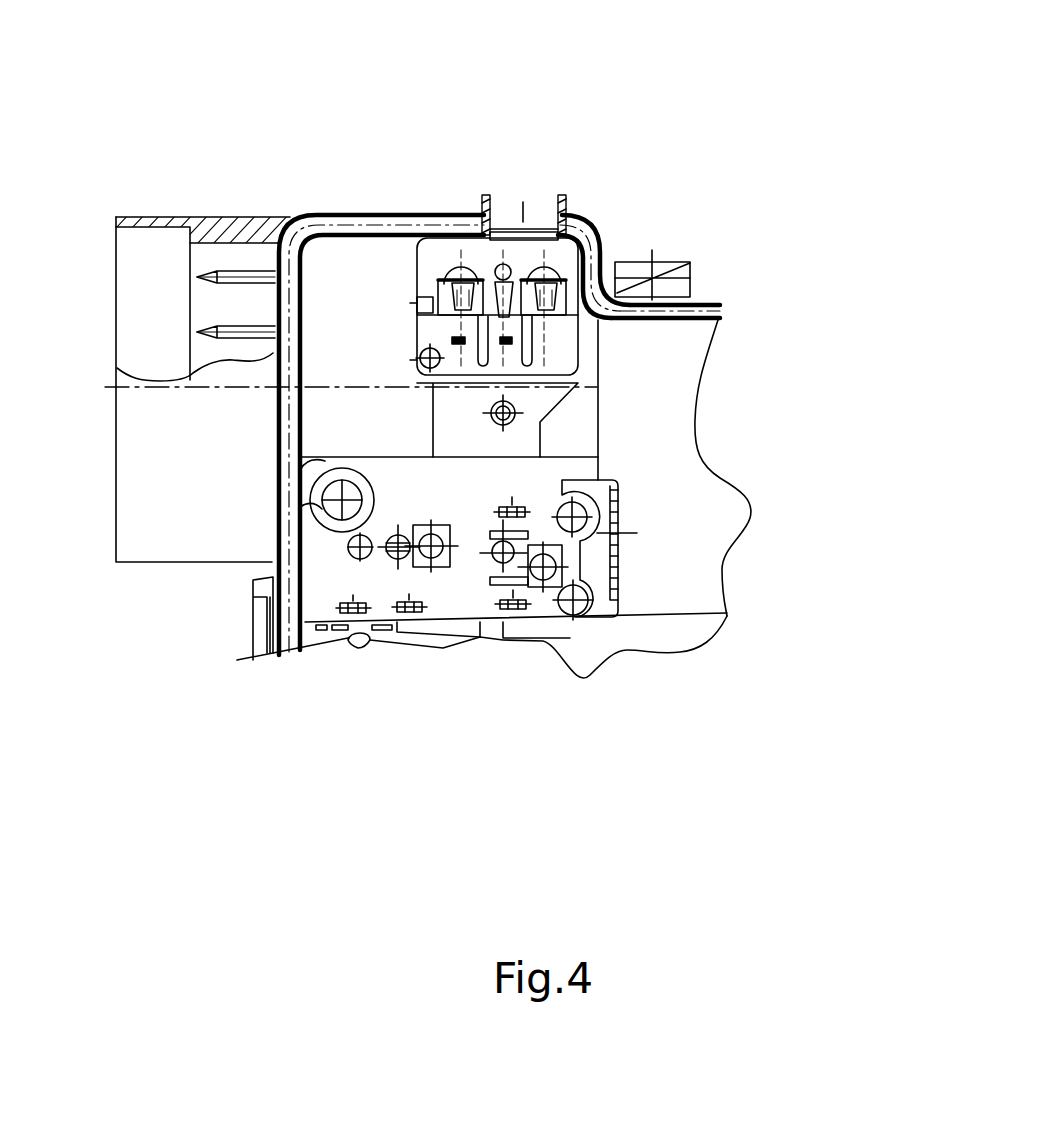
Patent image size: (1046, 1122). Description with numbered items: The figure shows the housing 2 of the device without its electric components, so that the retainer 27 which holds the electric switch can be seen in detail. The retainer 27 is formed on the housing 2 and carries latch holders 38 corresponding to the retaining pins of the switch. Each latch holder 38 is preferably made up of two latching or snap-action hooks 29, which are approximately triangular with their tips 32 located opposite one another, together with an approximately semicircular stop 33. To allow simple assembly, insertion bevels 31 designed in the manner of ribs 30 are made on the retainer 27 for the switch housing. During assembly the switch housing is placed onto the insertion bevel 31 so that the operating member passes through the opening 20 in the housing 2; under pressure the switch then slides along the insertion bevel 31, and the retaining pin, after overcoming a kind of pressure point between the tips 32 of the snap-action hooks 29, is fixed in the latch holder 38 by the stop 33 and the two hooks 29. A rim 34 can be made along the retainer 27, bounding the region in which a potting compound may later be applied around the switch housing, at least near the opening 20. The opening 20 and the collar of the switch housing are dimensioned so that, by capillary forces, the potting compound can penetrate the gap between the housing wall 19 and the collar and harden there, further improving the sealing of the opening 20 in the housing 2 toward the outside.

The housing 2 is at (681, 543).
The housing wall 19 is at (572, 265).
The opening 20 is at (509, 203).
The retainer 27 is at (472, 262).
The latching or snap-action hooks 29 is at (733, 99).
The ribs 30 is at (455, 345).
The insertion bevels 31 is at (440, 305).
The tips 32 is at (445, 272).
The stop 33 is at (547, 285).
The rim 34 is at (700, 297).
The latch holder 38 is at (458, 278).